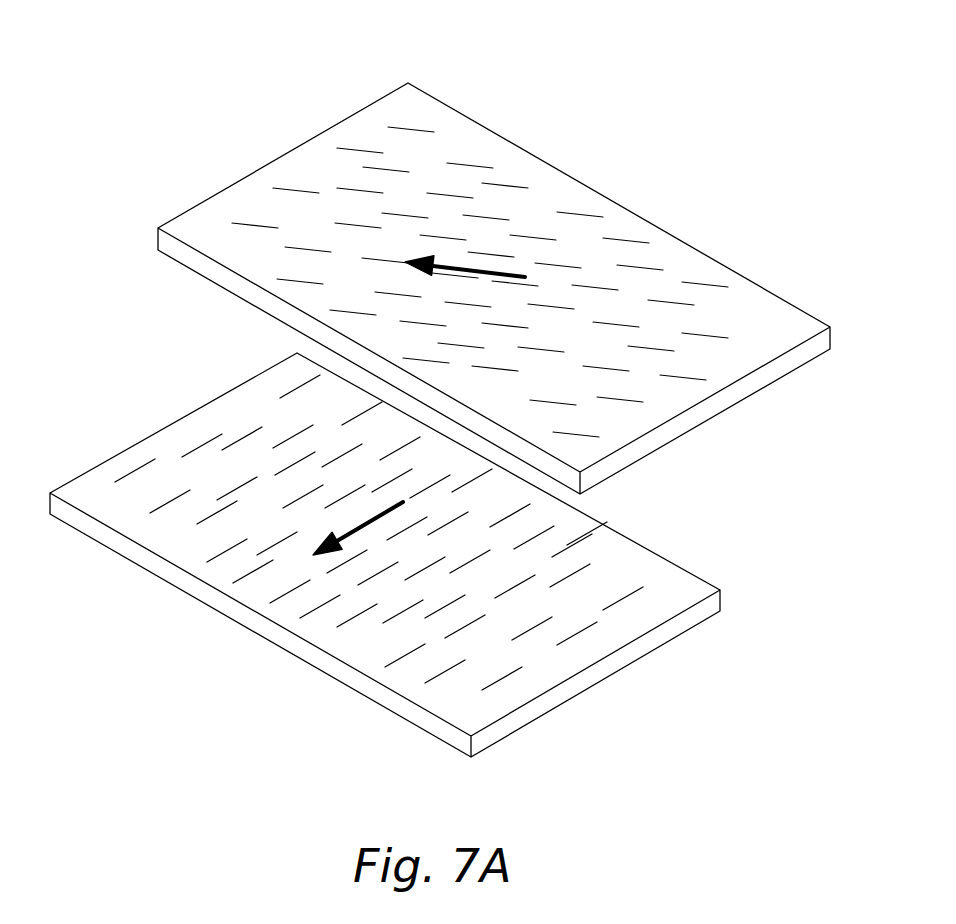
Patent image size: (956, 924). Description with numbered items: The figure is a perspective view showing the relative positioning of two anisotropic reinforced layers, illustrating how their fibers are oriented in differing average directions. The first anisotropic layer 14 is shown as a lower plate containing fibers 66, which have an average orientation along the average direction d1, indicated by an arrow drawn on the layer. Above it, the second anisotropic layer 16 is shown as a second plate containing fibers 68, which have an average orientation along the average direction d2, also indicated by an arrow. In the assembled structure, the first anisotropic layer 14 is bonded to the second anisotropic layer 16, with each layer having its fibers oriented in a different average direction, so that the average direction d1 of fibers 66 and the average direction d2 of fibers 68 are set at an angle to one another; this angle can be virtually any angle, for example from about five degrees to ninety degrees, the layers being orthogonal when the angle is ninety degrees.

The first anisotropic layer 14 is at (158, 438).
The second anisotropic layer 16 is at (297, 153).
The fibers 66 is at (287, 593).
The fibers 68 is at (468, 165).
The average direction d1 is at (365, 528).
The average direction d2 is at (490, 272).